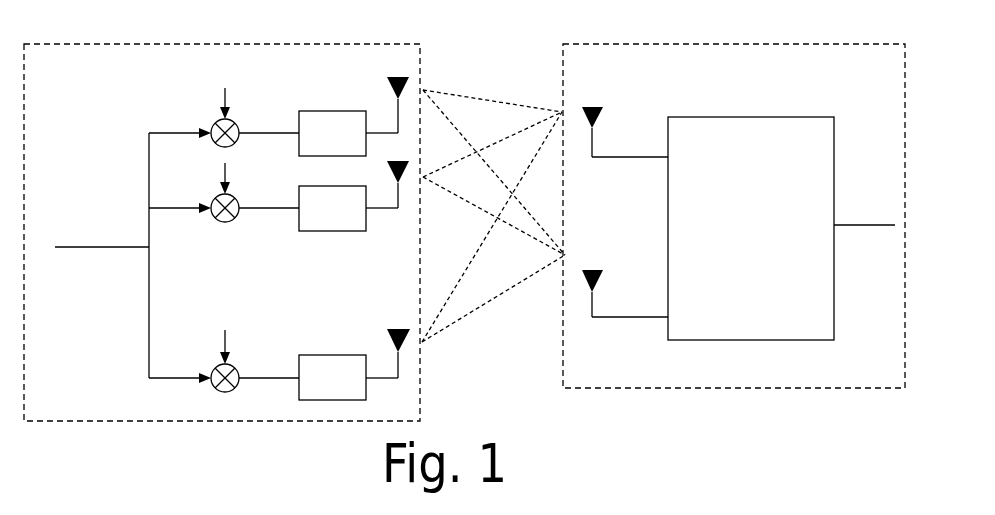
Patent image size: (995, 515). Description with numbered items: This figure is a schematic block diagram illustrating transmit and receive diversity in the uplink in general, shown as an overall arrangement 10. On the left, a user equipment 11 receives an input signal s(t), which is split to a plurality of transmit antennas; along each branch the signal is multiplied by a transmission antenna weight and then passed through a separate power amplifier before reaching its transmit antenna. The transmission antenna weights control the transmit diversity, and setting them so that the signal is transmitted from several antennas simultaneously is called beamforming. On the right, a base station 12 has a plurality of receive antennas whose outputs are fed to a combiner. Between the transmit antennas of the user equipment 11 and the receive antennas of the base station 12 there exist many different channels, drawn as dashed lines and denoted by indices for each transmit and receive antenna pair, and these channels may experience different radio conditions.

The wireless communication system 10 is at (503, 43).
The user equipment 11 is at (118, 79).
The base station 12 is at (862, 80).